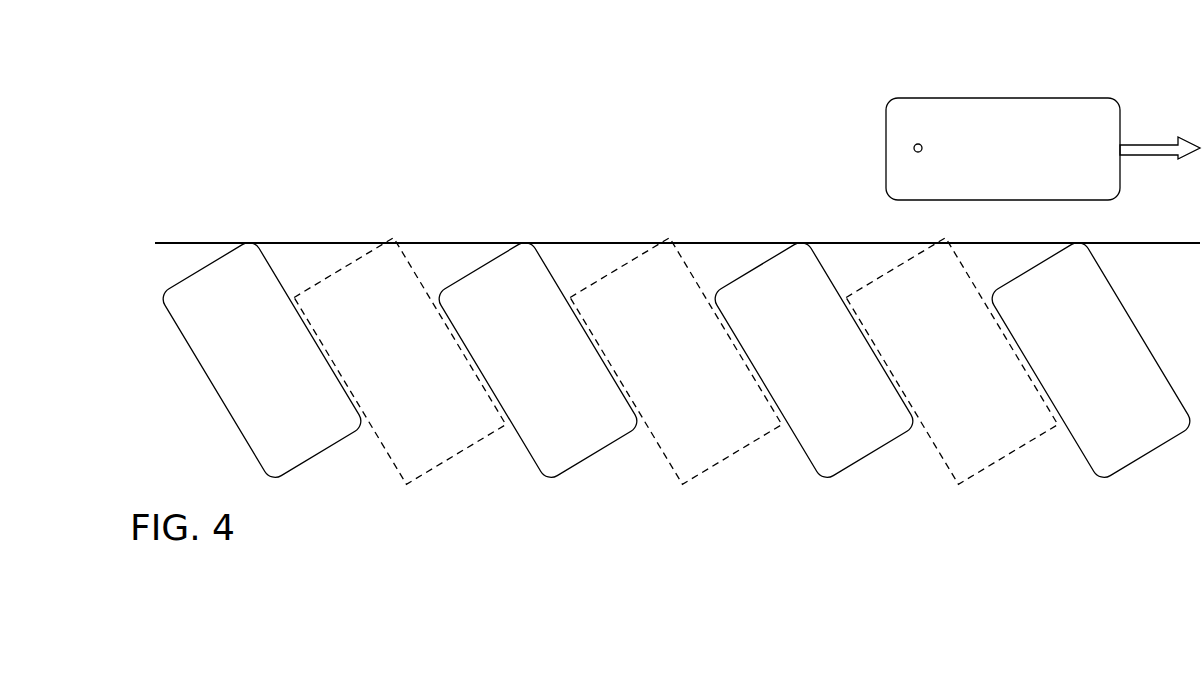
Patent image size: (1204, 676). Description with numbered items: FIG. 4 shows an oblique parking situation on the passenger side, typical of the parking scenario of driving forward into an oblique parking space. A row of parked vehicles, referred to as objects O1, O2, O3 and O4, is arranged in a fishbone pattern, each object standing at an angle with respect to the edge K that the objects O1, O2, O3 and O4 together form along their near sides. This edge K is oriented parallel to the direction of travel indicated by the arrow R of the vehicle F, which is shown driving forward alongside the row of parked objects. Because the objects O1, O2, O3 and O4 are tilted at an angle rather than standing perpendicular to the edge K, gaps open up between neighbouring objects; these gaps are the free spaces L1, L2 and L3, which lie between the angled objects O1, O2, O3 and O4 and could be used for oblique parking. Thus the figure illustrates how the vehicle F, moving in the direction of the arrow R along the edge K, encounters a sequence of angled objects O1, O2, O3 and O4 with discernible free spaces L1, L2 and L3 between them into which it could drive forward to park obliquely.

The edge K is at (743, 242).
The vehicle F is at (1017, 98).
The arrow R is at (1156, 147).
The object O1 is at (1091, 360).
The object O2 is at (814, 360).
The object O3 is at (538, 360).
The object O4 is at (262, 360).
The free space L1 is at (952, 361).
The free space L2 is at (676, 361).
The free space L3 is at (400, 361).